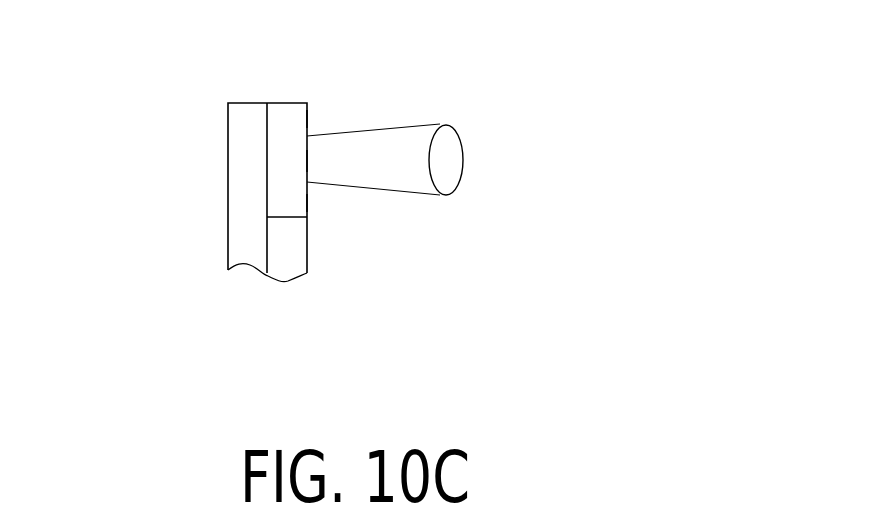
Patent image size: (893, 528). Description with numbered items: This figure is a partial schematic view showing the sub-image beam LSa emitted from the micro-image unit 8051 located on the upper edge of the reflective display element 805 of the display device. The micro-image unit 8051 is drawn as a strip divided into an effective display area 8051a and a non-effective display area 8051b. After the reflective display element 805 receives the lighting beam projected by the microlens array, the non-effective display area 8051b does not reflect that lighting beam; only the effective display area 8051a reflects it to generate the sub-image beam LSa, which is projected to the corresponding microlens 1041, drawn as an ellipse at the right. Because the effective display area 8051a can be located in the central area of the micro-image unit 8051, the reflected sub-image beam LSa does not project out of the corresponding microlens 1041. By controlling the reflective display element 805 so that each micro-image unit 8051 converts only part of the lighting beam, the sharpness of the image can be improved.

The reflective display element 805 is at (245, 182).
The micro-image unit 8051 is at (280, 133).
The effective display area 8051a is at (307, 160).
The non-effective display area 8051b is at (307, 119).
The sub-image beam LSa is at (397, 128).
The microlens 1041 is at (453, 158).